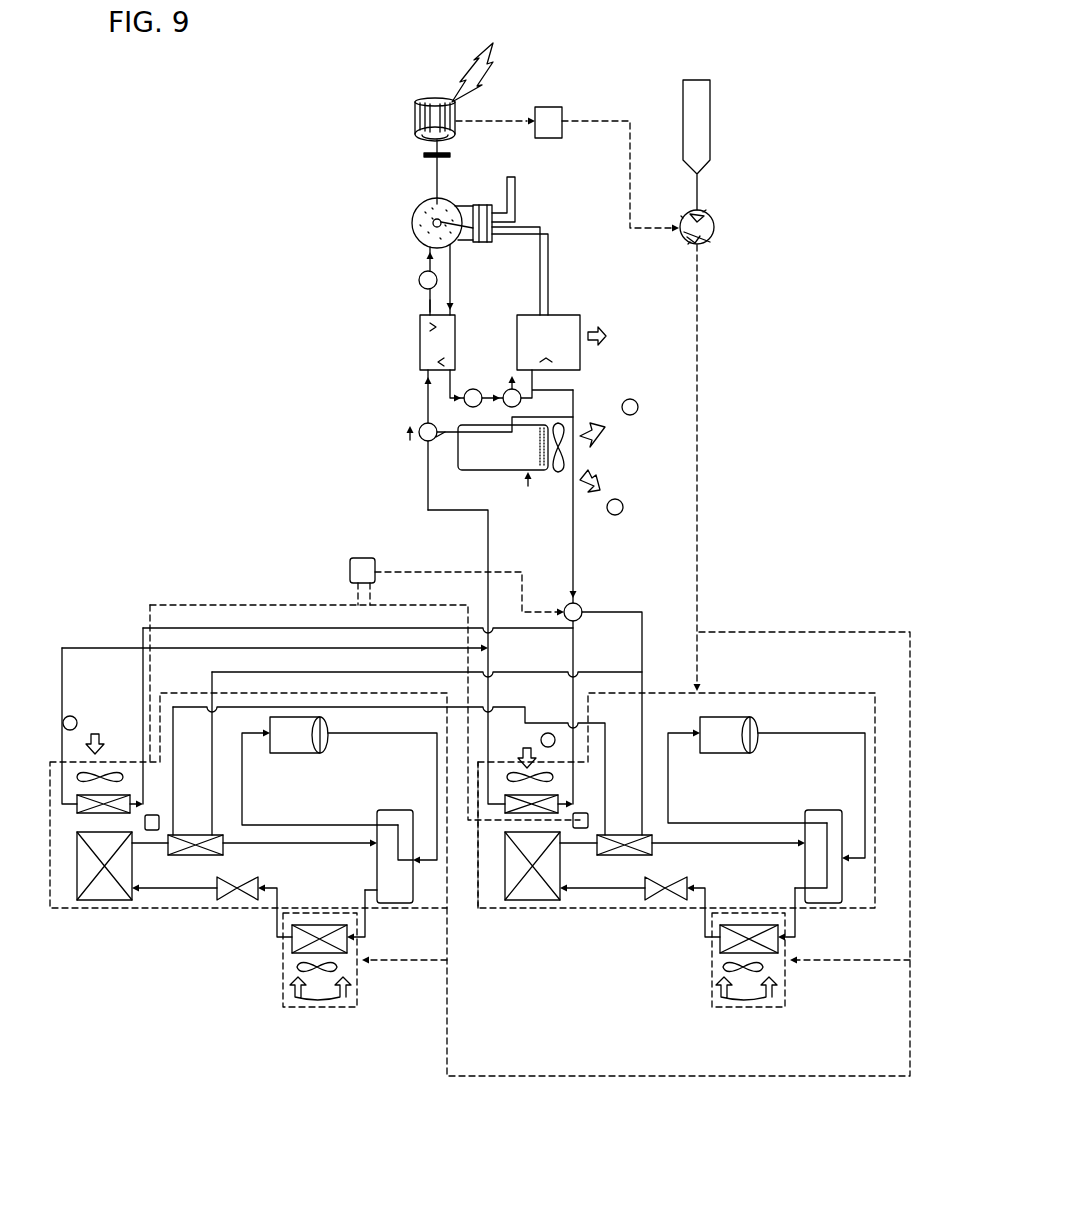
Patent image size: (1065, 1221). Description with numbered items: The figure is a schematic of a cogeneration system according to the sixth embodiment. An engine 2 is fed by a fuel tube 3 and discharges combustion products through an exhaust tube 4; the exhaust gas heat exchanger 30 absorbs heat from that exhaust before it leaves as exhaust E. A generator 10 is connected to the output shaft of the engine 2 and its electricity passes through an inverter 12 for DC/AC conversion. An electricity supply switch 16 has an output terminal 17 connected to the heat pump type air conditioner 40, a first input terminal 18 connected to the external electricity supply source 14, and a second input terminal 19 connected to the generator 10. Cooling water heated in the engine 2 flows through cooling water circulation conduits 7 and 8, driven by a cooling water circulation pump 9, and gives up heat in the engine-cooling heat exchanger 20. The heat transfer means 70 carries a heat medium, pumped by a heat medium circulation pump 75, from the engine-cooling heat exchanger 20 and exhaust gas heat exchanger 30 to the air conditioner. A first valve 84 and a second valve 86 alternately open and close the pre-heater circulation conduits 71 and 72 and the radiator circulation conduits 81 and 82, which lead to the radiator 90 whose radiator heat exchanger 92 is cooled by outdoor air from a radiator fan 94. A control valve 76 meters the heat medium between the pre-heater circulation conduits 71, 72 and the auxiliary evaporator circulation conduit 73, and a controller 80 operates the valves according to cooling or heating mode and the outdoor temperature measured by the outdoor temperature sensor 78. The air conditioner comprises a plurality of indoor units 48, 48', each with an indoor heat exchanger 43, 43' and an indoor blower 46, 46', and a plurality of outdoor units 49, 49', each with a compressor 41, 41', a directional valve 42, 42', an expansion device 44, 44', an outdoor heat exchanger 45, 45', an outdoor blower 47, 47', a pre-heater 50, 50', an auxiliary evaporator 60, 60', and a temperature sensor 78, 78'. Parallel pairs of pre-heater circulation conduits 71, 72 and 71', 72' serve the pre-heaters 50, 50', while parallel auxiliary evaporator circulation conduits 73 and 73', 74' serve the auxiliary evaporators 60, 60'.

The engine 2 is at (414, 208).
The fuel tube 3 is at (516, 195).
The exhaust tube 4 is at (549, 270).
The cooling water circulation conduit 7 is at (452, 275).
The cooling water circulation conduit 8 is at (428, 305).
The cooling water circulation pump 9 is at (419, 280).
The generator 10 is at (414, 120).
The inverter 12 is at (548, 118).
The external electricity supply source 14 is at (710, 122).
The electricity supply switch 16 is at (714, 236).
The output terminal 17 is at (689, 242).
The first input terminal 18 is at (705, 213).
The second input terminal 19 is at (682, 219).
The engine-cooling heat exchanger 20 is at (420, 348).
The exhaust gas heat exchanger 30 is at (582, 356).
The exhaust E is at (598, 329).
The heat pump type air conditioner 40 is at (142, 980).
The compressor 41 is at (766, 789).
The compressor 41' is at (339, 790).
The directional valve 42 is at (838, 878).
The directional valve 42' is at (402, 880).
The indoor heat exchanger 43 is at (811, 964).
The indoor heat exchanger 43' is at (365, 966).
The expansion device 44 is at (640, 922).
The expansion device 44' is at (212, 925).
The outdoor heat exchanger 45 is at (532, 895).
The outdoor heat exchanger 45' is at (104, 897).
The indoor blower 46 is at (722, 994).
The indoor blower 46' is at (295, 995).
The outdoor blower 47 is at (673, 800).
The outdoor blower 47' is at (72, 749).
The indoor unit 48 is at (725, 943).
The indoor unit 48' is at (295, 946).
The outdoor unit 49 is at (482, 866).
The outdoor unit 49' is at (241, 789).
The pre-heater 50 is at (512, 821).
The pre-heater 50' is at (82, 800).
The auxiliary evaporator 60 is at (682, 906).
The auxiliary evaporator 60' is at (254, 908).
The heat transfer means 70 is at (652, 602).
The pre-heater circulation conduit 71 is at (437, 645).
The pre-heater circulation conduit 71' is at (275, 677).
The pre-heater circulation conduit 72 is at (603, 579).
The pre-heater circulation conduit 72' is at (358, 675).
The auxiliary evaporator circulation conduit 73 is at (658, 712).
The auxiliary evaporator circulation conduit 73' is at (427, 741).
The auxiliary evaporator circulation conduit 74' is at (389, 692).
The heat medium circulation pump 75 is at (474, 389).
The control valve 76 is at (565, 606).
The outdoor temperature sensor 78 is at (586, 880).
The temperature sensor 78' is at (159, 883).
The controller 80 is at (356, 566).
The radiator circulation conduit 81 is at (573, 417).
The radiator circulation conduit 82 is at (436, 437).
The first valve 84 is at (512, 388).
The second valve 86 is at (420, 425).
The radiator 90 is at (530, 485).
The radiator heat exchanger 92 is at (548, 472).
The radiator fan 94 is at (582, 434).